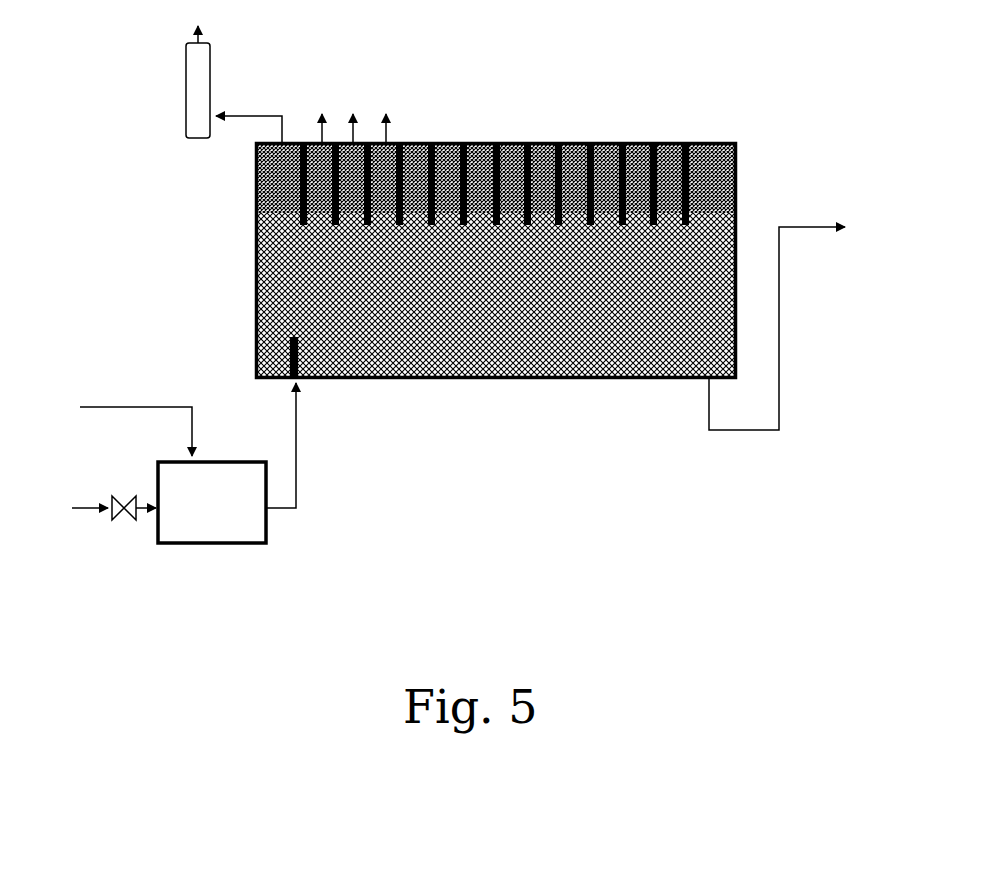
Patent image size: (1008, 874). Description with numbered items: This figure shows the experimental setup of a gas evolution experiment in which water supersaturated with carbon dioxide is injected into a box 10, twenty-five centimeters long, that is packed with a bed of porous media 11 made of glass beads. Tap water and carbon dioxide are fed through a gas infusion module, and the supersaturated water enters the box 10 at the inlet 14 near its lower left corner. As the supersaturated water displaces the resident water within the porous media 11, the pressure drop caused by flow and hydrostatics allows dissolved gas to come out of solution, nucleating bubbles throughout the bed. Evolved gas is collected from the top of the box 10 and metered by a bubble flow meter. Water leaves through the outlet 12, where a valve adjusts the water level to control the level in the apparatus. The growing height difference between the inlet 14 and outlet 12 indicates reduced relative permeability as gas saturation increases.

The box 10 is at (464, 313).
The porous media 11 is at (548, 378).
The outlet 12 is at (707, 381).
The inlet 14 is at (300, 381).